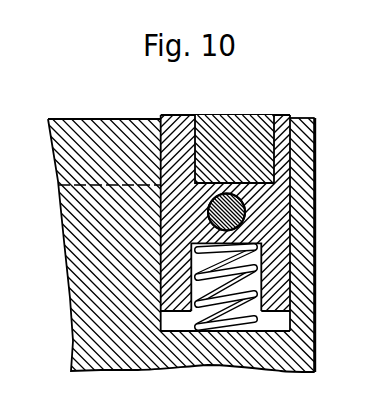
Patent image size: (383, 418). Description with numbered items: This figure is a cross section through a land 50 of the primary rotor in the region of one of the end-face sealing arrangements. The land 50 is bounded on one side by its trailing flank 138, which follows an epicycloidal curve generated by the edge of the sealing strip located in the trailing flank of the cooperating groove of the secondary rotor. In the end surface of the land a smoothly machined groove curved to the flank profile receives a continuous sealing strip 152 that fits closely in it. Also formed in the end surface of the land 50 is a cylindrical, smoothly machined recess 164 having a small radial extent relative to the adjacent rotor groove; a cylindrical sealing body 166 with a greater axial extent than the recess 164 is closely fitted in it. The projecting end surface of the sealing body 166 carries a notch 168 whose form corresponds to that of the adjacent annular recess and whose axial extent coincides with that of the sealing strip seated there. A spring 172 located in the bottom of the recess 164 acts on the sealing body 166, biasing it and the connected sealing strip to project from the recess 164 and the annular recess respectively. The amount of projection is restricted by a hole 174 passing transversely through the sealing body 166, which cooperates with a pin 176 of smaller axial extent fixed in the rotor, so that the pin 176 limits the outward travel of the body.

The land 50 is at (90, 320).
The trailing flank 138 is at (308, 118).
The sealing strip 152 is at (203, 115).
The cylindrical recess 164 is at (272, 316).
The cylindrical sealing body 166 is at (263, 254).
The notch 168 is at (267, 152).
The compression spring 172 is at (208, 323).
The hole 174 is at (232, 188).
The pin 176 is at (237, 207).